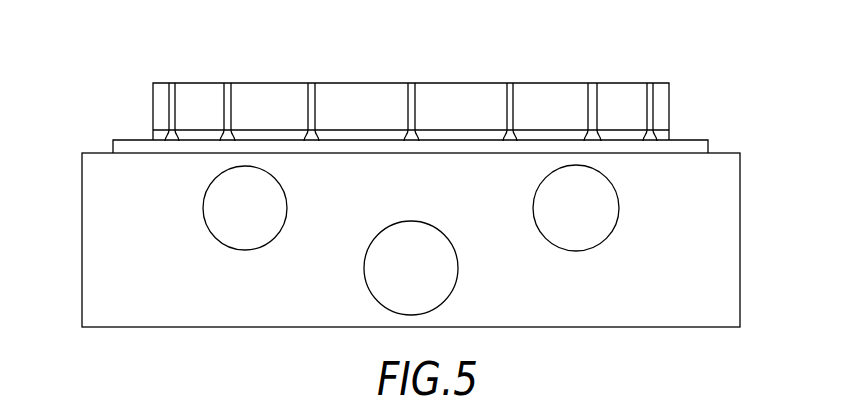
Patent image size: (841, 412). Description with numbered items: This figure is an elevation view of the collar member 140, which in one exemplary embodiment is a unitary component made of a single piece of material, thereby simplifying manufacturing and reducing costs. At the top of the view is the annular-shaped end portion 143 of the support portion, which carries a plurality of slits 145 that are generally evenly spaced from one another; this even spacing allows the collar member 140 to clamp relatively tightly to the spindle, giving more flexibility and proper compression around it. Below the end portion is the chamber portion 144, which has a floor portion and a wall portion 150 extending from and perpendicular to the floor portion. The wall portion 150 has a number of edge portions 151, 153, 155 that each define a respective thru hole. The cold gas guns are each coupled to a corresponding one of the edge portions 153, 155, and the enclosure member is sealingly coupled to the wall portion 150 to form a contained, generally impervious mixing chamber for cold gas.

The collar member 140 is at (76, 93).
The annular-shaped end portion 143 is at (620, 97).
The chamber portion 144 is at (718, 172).
The slits 145 is at (512, 84).
The wall portion 150 is at (725, 218).
The edge portion 151 is at (394, 230).
The edge portion 153 is at (267, 248).
The edge portion 155 is at (598, 245).